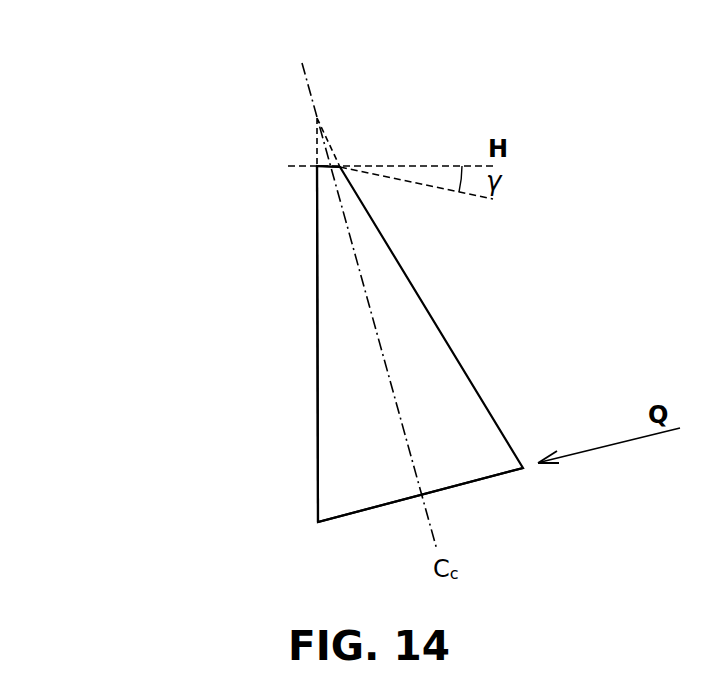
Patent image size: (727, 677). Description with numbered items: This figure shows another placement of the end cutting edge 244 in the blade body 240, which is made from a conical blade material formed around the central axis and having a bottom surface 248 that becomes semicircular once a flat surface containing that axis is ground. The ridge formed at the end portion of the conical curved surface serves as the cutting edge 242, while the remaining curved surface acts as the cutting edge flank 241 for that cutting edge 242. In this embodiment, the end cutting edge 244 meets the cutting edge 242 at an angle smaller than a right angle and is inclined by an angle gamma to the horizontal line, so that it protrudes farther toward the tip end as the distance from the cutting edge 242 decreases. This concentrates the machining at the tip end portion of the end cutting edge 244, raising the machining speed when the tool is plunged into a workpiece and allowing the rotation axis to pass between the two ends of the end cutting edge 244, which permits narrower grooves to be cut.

The blade body 240 is at (98, 37).
The cutting edge flank 241 is at (418, 320).
The cutting edge 242 is at (317, 257).
The end cutting edge 244 is at (342, 163).
The bottom surface 248 is at (483, 478).